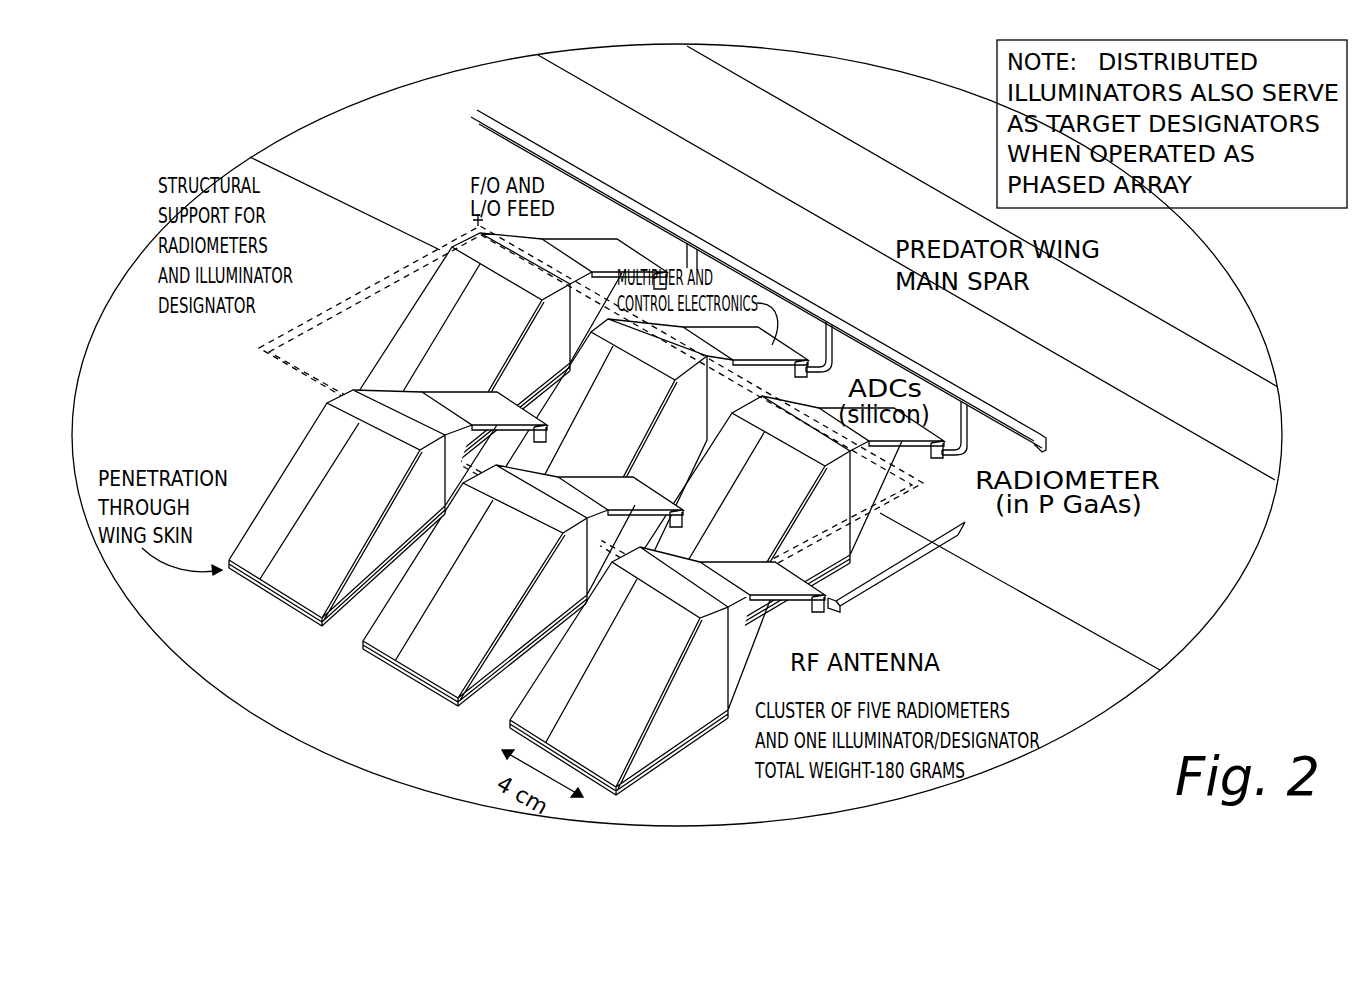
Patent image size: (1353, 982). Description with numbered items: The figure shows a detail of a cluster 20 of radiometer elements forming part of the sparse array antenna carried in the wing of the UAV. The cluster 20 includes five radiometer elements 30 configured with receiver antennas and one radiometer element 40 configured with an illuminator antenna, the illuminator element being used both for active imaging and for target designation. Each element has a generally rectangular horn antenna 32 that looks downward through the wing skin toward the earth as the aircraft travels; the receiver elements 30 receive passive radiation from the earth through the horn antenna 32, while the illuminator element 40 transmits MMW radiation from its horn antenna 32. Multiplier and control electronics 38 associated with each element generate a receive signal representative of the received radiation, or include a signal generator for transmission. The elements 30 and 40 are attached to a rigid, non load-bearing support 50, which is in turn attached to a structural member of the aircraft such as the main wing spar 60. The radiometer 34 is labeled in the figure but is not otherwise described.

The cluster 20 is at (160, 707).
The radiometer element configured with receiver antenna 30 is at (431, 307).
The horn antenna 32 is at (745, 633).
The radiometer chip (in P GaAs) 34 is at (940, 448).
The multiplier and control electronics 38 is at (768, 343).
The radiometer element configured with an illuminator antenna 40 is at (628, 408).
The support 50 is at (258, 355).
The main wing spar 60 is at (1112, 347).